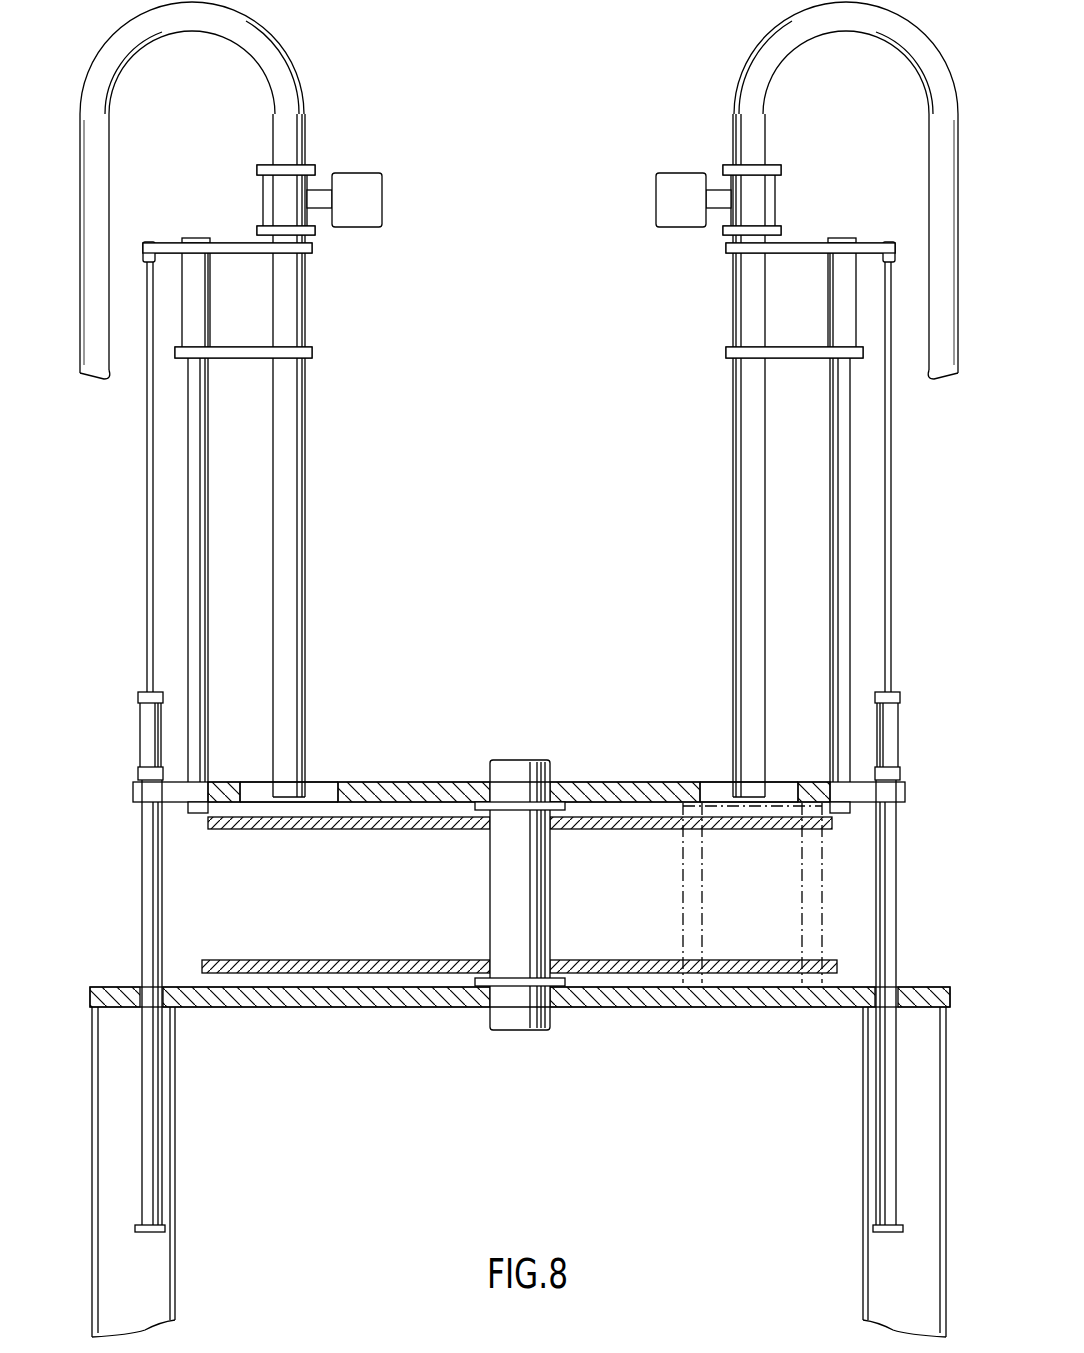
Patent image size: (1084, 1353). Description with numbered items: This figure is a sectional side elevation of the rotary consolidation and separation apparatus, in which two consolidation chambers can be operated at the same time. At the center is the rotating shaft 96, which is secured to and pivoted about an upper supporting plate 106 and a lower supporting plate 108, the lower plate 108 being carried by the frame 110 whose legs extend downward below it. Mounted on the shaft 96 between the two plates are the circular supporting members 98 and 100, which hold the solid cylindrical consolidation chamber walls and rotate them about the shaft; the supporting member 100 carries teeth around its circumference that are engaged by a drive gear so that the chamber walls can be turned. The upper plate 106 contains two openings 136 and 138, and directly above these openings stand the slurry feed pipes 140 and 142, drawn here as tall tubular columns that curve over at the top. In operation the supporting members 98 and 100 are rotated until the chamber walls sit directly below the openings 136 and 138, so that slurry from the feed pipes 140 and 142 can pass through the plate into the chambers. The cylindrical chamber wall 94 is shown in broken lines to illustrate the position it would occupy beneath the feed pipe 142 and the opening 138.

The cylindrical consolidation chamber wall 94 is at (822, 913).
The rotating shaft 96 is at (537, 906).
The circular supporting member 98 is at (596, 829).
The circular supporting member 100 is at (630, 960).
The supporting plate 106 is at (585, 782).
The supporting plate 108 is at (400, 1007).
The frame 110 is at (176, 1117).
The opening 136 is at (325, 782).
The opening 138 is at (715, 782).
The slurry feed pipe 140 is at (296, 503).
The slurry feed pipe 142 is at (735, 503).